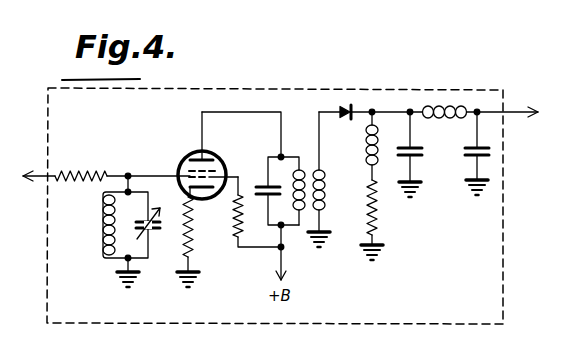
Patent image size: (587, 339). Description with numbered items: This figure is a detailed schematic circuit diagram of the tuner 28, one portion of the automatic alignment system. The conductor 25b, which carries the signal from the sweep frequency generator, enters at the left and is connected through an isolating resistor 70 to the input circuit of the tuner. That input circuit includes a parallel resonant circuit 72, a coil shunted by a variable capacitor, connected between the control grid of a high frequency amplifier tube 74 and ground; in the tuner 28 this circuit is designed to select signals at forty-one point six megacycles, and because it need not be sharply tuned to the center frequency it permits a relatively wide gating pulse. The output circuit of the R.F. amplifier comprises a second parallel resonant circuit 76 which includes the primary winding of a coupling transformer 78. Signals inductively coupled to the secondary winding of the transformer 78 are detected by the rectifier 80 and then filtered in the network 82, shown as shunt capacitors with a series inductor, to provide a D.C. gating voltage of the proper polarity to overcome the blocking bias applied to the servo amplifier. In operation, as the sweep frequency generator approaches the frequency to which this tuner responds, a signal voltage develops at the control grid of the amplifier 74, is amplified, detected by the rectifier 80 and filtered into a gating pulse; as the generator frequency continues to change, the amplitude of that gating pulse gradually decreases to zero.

The tuner 28 is at (308, 81).
The conductor 25b is at (27, 180).
The isolating resistor 70 is at (88, 172).
The parallel resonant circuit 72 is at (101, 231).
The high frequency amplifier tube 74 is at (196, 153).
The parallel resonant circuit 76 is at (287, 220).
The coupling transformer 78 is at (314, 147).
The rectifier 80 is at (350, 104).
The filter network 82 is at (456, 161).